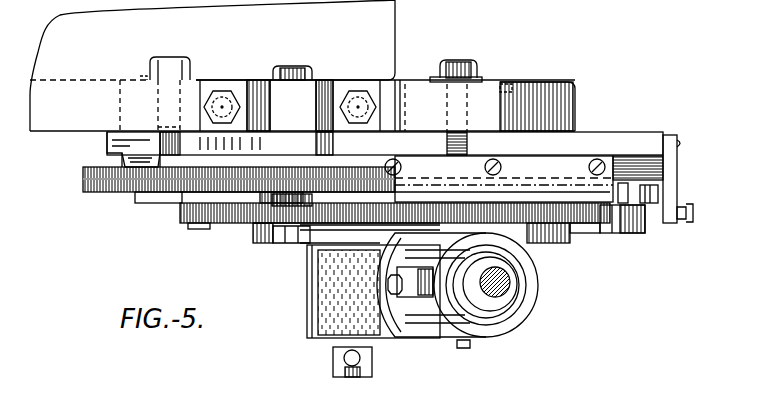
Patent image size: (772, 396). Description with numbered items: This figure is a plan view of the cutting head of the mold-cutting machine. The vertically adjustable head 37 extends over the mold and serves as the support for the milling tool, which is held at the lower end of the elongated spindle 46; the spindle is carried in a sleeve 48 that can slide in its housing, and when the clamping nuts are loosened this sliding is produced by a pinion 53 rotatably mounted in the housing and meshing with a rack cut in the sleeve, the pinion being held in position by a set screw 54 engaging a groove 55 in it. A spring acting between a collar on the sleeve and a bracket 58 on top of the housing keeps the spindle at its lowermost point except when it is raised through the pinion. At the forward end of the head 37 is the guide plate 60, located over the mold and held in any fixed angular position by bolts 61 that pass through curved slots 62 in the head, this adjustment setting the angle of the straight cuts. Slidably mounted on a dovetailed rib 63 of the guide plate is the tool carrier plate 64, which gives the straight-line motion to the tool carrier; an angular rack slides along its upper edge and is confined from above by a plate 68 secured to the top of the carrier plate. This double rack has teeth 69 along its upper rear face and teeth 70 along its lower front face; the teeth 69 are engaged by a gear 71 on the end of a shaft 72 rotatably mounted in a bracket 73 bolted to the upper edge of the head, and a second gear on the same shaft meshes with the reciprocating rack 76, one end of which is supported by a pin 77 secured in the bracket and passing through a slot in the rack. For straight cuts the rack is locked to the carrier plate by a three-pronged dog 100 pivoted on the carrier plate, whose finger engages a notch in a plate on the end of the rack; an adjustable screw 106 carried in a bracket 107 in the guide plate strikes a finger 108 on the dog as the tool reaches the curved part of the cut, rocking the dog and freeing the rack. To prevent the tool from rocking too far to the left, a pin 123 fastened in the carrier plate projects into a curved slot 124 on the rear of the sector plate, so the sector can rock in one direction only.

The head 37 is at (385, 47).
The spindle 46 is at (508, 288).
The sleeve 48 is at (500, 307).
The pinion 53 is at (380, 327).
The set screw 54 is at (373, 355).
The groove 55 is at (330, 340).
The bracket 58 is at (482, 335).
The guide plate 60 is at (108, 142).
The bolts 61 is at (183, 67).
The curved slots 62 is at (138, 74).
The dovetailed rib 63 is at (123, 157).
The tool carrier plate 64 is at (162, 197).
The plate 68 is at (562, 165).
The teeth 69 is at (227, 220).
The teeth 70 is at (587, 220).
The gear 71 is at (267, 215).
The shaft 72 is at (290, 243).
The bracket 73 is at (338, 82).
The reciprocating rack 76 is at (108, 190).
The pin 77 is at (292, 72).
The three-pronged dog 100 is at (637, 218).
The adjustable screw 106 is at (693, 210).
The bracket 107 is at (673, 188).
The finger 108 is at (647, 203).
The pin 123 is at (473, 193).
The curved slot 124 is at (528, 240).